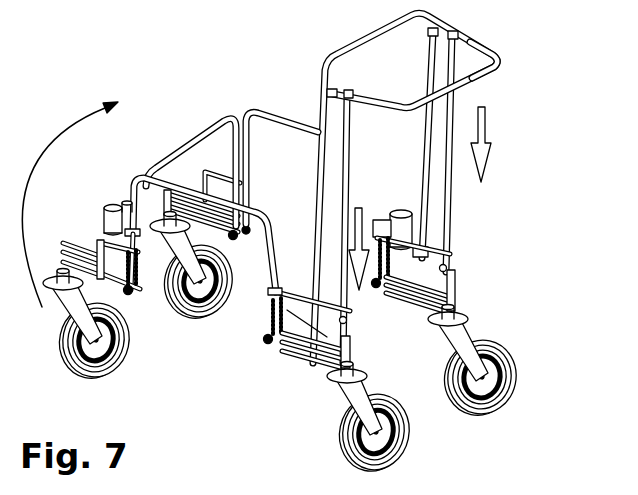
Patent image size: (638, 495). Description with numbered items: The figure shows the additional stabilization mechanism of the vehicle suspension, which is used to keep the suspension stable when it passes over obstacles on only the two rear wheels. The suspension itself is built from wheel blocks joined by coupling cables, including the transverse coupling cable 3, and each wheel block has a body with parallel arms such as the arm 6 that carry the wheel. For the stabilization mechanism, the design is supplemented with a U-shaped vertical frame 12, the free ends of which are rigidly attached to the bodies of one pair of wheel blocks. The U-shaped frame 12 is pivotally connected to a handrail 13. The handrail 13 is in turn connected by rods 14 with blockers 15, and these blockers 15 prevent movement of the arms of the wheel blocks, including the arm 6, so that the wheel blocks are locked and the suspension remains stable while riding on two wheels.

The transverse coupling cable 3 is at (312, 203).
The arm 6 is at (303, 353).
The U-shaped vertical frame 12 is at (357, 52).
The handrail 13 is at (492, 52).
The rod 14 is at (447, 180).
The blocker 15 is at (343, 320).